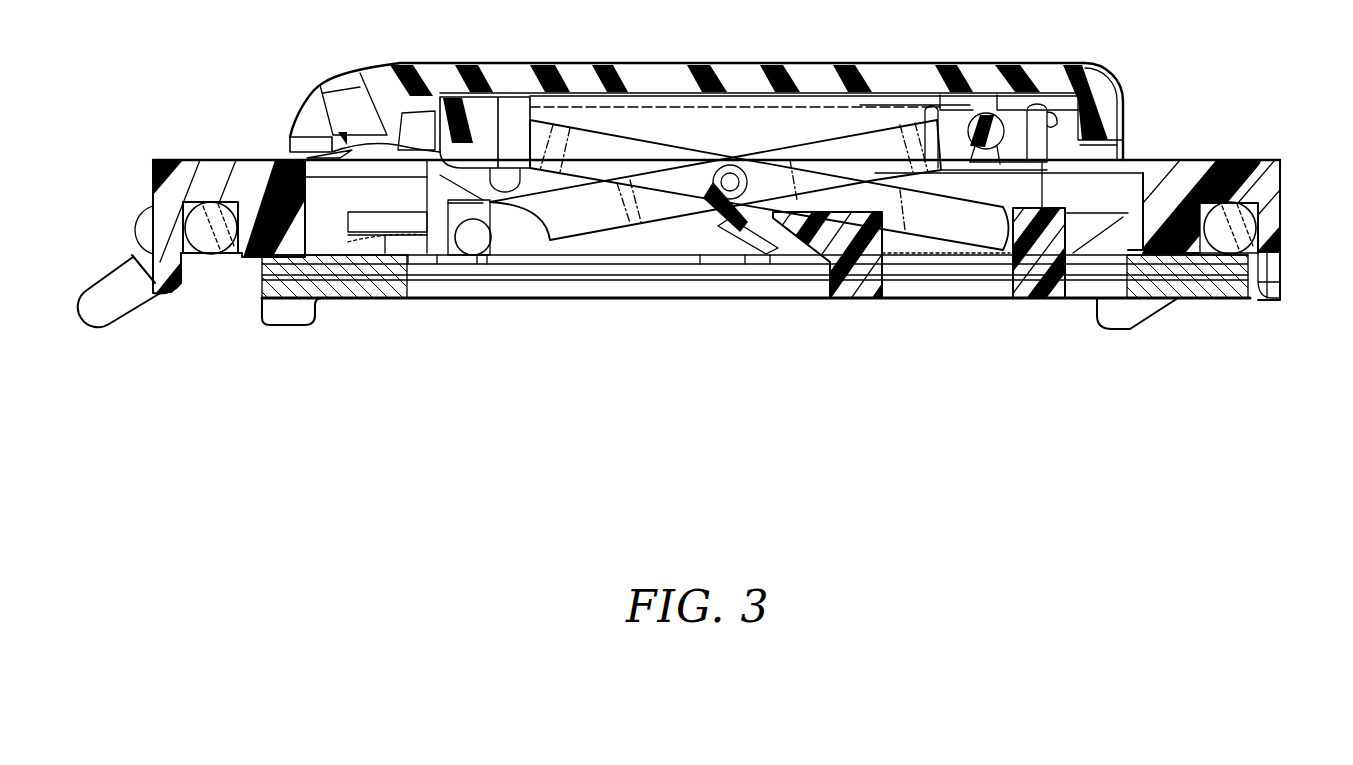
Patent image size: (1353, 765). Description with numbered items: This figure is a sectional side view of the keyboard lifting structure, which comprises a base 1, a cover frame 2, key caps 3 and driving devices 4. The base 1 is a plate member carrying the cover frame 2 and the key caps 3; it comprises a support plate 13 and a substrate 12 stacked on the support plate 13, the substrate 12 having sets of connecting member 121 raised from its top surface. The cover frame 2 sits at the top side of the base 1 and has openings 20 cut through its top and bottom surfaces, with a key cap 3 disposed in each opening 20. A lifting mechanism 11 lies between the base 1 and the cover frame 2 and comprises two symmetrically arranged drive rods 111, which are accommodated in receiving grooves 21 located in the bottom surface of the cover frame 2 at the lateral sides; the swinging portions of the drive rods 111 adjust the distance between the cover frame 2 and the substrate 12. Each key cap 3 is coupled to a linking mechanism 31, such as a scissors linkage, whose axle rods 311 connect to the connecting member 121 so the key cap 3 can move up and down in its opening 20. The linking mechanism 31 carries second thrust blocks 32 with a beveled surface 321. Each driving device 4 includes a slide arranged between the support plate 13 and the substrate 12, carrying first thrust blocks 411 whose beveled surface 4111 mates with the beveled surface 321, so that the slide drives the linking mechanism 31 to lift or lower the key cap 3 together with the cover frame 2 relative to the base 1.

The base 1 is at (756, 352).
The lifting mechanism 11 is at (1262, 209).
The drive rod 111 is at (1240, 231).
The substrate 12 is at (308, 260).
The connecting member 121 is at (415, 240).
The support plate 13 is at (1187, 293).
The cover frame 2 is at (1200, 175).
The opening 20 is at (1126, 178).
The receiving groove 21 is at (194, 207).
The key cap 3 is at (863, 78).
The linking mechanism 31 is at (623, 150).
The axle rod 311 is at (470, 239).
The second thrust block 32 is at (700, 187).
The beveled surface 321 is at (731, 178).
The driving device 4 is at (920, 319).
The first thrust block 411 is at (813, 282).
The beveled surface 4111 is at (810, 240).